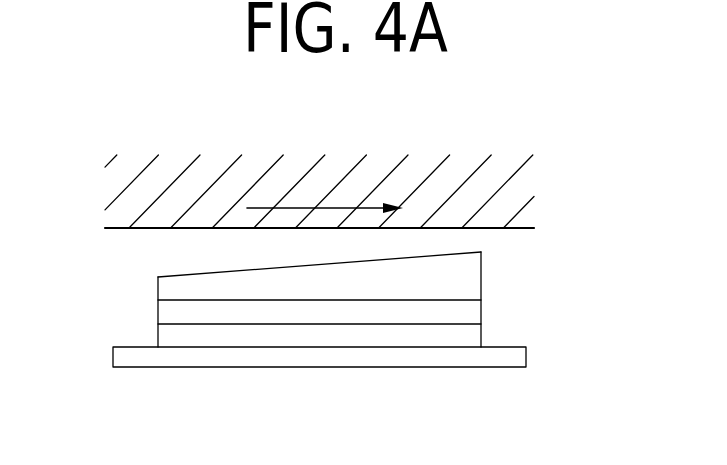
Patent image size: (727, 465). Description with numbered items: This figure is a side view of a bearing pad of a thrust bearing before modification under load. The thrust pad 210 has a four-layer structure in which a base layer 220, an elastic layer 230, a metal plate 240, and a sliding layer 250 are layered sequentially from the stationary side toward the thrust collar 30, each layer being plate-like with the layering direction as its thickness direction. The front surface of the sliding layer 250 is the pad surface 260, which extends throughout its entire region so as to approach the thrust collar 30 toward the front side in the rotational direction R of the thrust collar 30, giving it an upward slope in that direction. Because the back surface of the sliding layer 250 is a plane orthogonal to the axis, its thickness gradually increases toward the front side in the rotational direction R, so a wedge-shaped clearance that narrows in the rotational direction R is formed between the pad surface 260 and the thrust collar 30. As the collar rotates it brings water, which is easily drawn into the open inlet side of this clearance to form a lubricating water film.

The thrust collar 30 is at (455, 183).
The rotational direction R is at (335, 208).
The thrust pad 210 is at (333, 283).
The base layer 220 is at (475, 360).
The elastic layer 230 is at (470, 336).
The metal plate 240 is at (467, 313).
The sliding layer 250 is at (465, 278).
The pad surface 260 is at (185, 275).